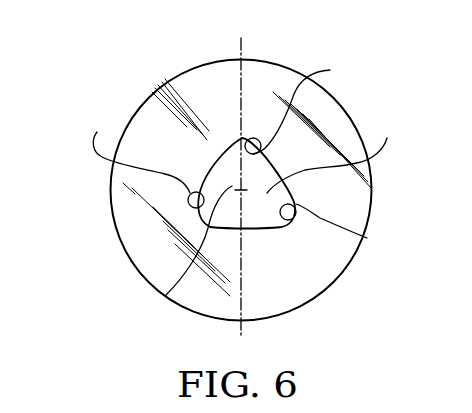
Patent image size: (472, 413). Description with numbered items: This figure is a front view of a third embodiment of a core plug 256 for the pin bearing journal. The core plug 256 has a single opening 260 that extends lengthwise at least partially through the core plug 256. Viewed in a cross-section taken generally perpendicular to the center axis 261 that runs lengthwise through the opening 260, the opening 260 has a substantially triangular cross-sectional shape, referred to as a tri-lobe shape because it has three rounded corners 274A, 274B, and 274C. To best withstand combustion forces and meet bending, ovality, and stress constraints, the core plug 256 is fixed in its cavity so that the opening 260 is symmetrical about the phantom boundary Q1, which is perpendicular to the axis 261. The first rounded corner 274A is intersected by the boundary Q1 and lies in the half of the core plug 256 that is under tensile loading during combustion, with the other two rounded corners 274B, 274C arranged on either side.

The core plug 256 is at (352, 121).
The opening 260 is at (333, 157).
The center axis 261 is at (165, 295).
The first rounded corner 274A is at (308, 108).
The second rounded corner 274B is at (140, 161).
The third rounded corner 274C is at (368, 238).
The phantom boundary Q1 is at (241, 45).